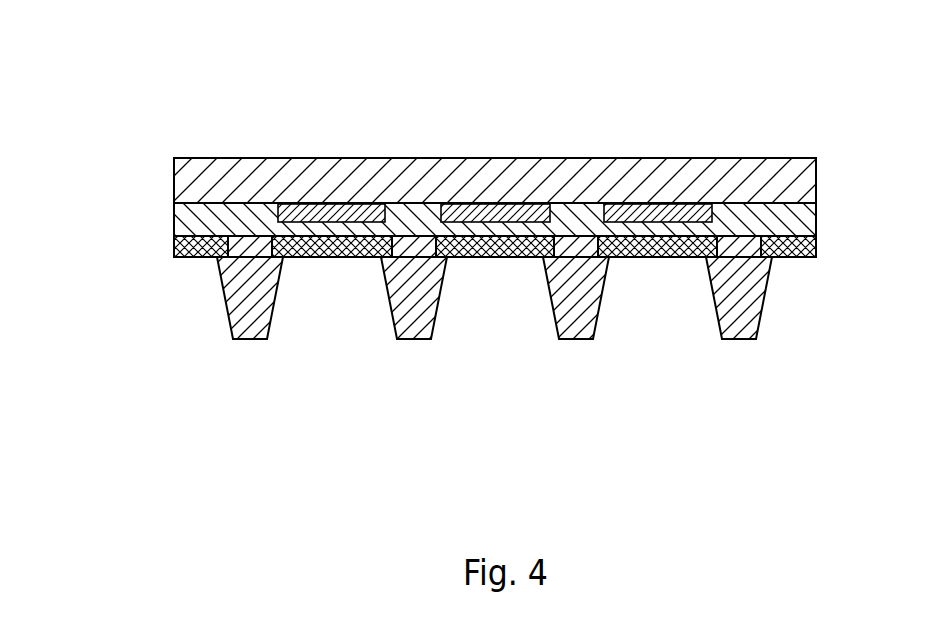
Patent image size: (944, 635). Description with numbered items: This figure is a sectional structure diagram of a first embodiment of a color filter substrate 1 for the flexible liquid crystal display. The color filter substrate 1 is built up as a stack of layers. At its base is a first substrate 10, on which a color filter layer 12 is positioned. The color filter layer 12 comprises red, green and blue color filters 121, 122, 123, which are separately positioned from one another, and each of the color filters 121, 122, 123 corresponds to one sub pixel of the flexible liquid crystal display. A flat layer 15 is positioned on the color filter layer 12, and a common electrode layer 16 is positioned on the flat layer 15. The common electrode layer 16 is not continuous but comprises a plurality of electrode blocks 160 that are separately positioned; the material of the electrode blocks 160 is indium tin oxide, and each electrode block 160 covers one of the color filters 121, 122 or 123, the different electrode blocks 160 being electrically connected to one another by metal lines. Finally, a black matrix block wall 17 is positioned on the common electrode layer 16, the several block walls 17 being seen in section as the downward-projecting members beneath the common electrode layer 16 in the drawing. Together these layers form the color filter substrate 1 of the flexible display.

The color filter substrate 1 is at (446, 223).
The first substrate 10 is at (195, 180).
The color filter layer 12 is at (495, 118).
The red color filter 121 is at (337, 222).
The green color filter 122 is at (497, 213).
The blue color filter 123 is at (658, 147).
The flat layer 15 is at (257, 217).
The common electrode layer 16 is at (466, 324).
The electrode block 160 is at (340, 247).
The black matrix block wall 17 is at (492, 334).